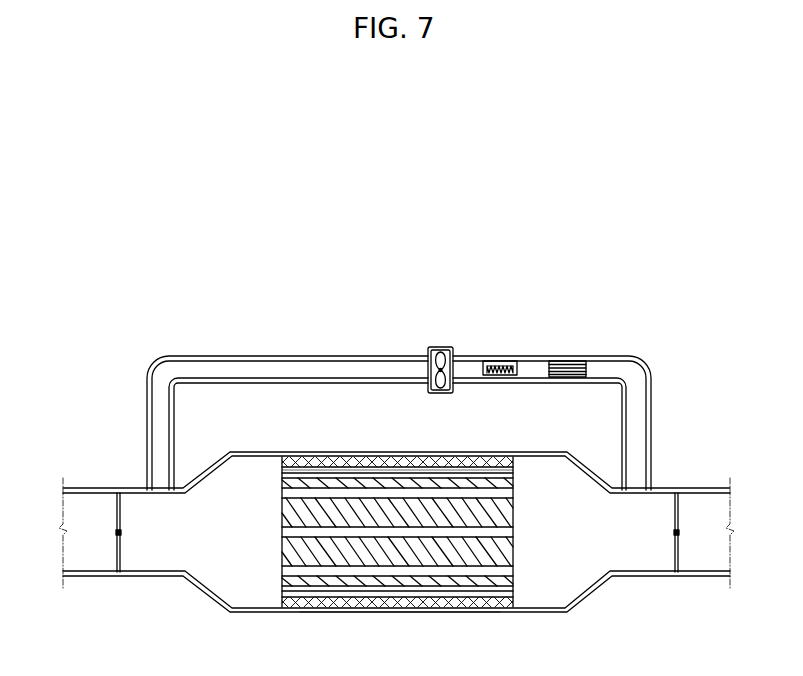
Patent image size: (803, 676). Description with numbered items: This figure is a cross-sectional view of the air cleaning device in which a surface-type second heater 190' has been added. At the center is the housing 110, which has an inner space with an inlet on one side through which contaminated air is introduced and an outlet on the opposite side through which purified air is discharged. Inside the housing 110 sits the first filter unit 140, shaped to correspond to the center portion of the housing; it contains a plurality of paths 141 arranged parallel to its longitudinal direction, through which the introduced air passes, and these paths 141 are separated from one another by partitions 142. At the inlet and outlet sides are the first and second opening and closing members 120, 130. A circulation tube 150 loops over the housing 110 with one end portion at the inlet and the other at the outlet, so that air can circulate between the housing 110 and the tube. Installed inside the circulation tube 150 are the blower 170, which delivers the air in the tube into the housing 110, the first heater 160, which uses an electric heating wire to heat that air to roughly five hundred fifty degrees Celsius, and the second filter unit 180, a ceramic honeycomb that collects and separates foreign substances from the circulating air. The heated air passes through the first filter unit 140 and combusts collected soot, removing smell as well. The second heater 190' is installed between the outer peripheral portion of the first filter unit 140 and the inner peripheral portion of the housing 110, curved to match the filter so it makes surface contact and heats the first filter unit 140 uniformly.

The housing 110 is at (296, 455).
The first opening and closing member 120 is at (119, 560).
The second opening and closing member 130 is at (677, 557).
The first filter unit 140 is at (427, 413).
The paths 141 is at (376, 475).
The partitions 142 is at (412, 515).
The circulation tube 150 is at (370, 357).
The first heater 160 is at (502, 361).
The blower 170 is at (447, 348).
The second filter unit 180 is at (566, 361).
The second heater 190' is at (400, 638).